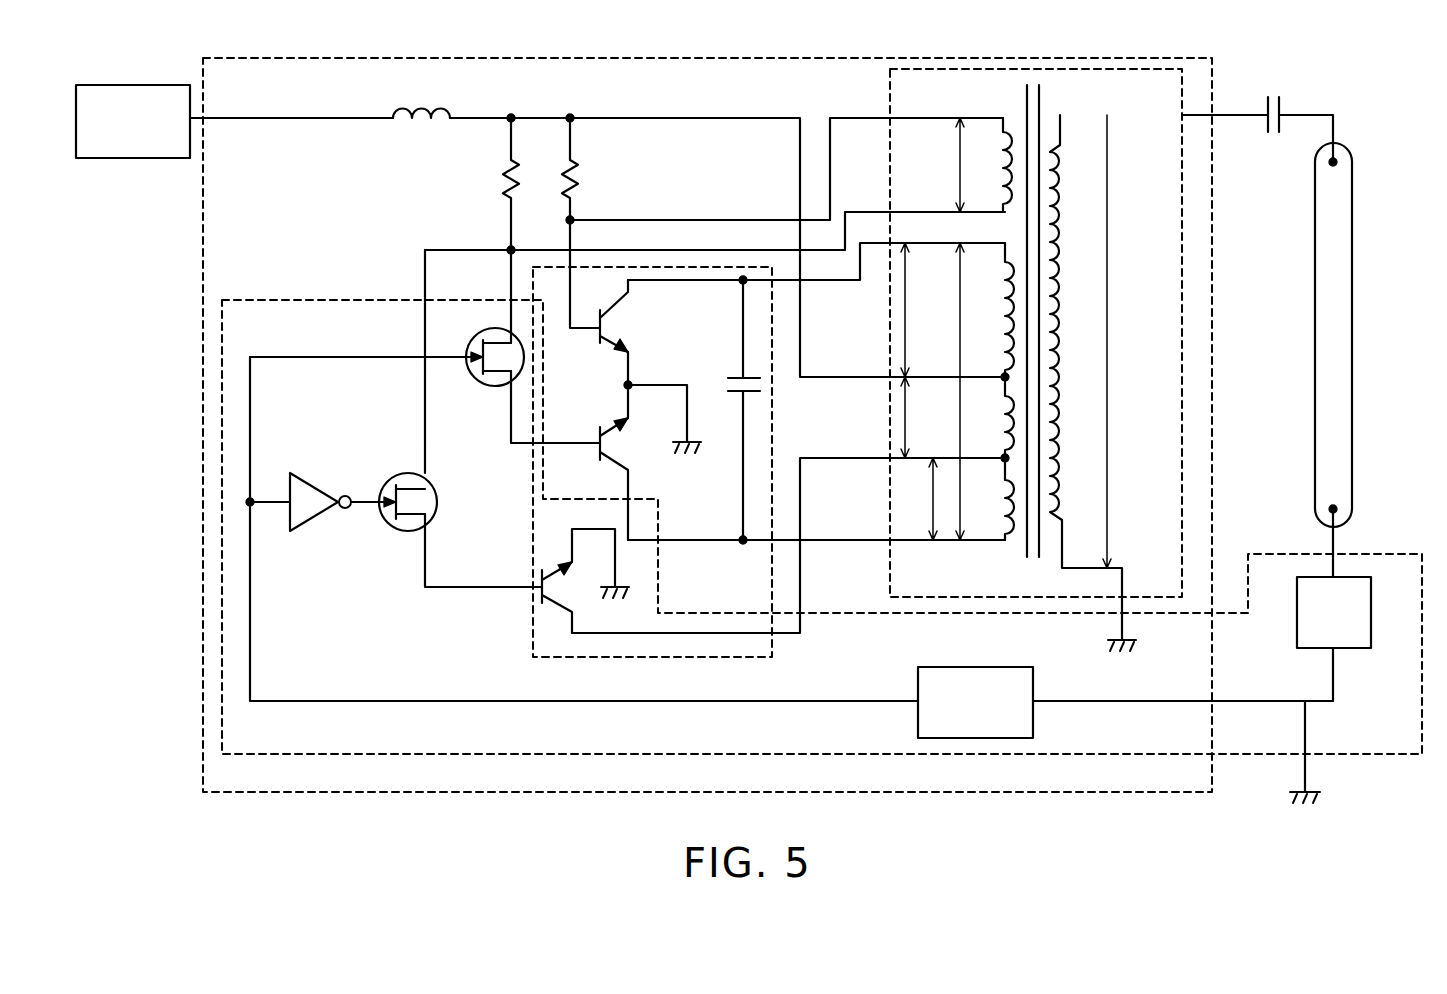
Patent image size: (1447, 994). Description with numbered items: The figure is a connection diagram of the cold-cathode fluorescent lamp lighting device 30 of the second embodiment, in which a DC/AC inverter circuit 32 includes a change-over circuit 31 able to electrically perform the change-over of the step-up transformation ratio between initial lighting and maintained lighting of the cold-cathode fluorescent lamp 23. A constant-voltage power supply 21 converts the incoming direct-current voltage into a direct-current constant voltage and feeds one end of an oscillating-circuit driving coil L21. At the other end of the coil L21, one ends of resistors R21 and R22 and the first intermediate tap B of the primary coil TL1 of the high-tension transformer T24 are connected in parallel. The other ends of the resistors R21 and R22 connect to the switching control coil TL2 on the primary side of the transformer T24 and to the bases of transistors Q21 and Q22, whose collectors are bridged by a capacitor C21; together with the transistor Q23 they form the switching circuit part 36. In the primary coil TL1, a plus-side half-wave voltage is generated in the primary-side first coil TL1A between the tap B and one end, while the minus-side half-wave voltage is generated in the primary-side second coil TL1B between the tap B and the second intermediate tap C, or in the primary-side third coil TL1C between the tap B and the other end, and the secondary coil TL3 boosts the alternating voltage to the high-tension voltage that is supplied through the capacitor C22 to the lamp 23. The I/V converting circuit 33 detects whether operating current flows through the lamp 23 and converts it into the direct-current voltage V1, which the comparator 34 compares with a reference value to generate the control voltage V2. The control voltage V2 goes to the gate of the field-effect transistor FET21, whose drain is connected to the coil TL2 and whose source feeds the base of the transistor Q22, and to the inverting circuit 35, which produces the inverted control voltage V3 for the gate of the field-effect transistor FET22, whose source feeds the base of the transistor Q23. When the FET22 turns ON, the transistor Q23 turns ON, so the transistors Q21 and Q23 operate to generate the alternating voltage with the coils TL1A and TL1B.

The constant-voltage power supply 21 is at (136, 84).
The DC/AC inverter circuit 32 is at (675, 56).
The oscillating-circuit driving coil L21 is at (416, 110).
The resistor R21 is at (502, 187).
The resistor R22 is at (578, 183).
The high-tension transformer T24 is at (961, 50).
The switching control coil TL2 is at (960, 155).
The primary coil TL1 is at (963, 512).
The primary-side first coil TL1A is at (904, 319).
The primary-side second coil TL1B is at (904, 418).
The primary-side third coil TL1C is at (932, 499).
The secondary coil TL3 is at (1107, 150).
The first intermediate tap B is at (1004, 376).
The second intermediate tap C is at (1004, 458).
The field-effect transistor FET21 is at (481, 383).
The field-effect transistor FET22 is at (397, 474).
The transistor Q21 is at (600, 338).
The transistor Q22 is at (600, 455).
The transistor Q23 is at (540, 597).
The capacitor C21 is at (730, 378).
The capacitor C22 is at (1267, 101).
The inverting circuit 35 is at (312, 518).
The control voltage V3 is at (365, 508).
The switching circuit part 36 is at (534, 668).
The change-over circuit 31 is at (1395, 556).
The comparator 34 is at (1033, 683).
The I/V converting circuit 33 is at (1355, 650).
The direct-current voltage V1 is at (1245, 700).
The control voltage V2 is at (846, 700).
The cold-cathode fluorescent lamp lighting device 30 is at (1355, 66).
The cold-cathode fluorescent lamp 23 is at (1353, 268).